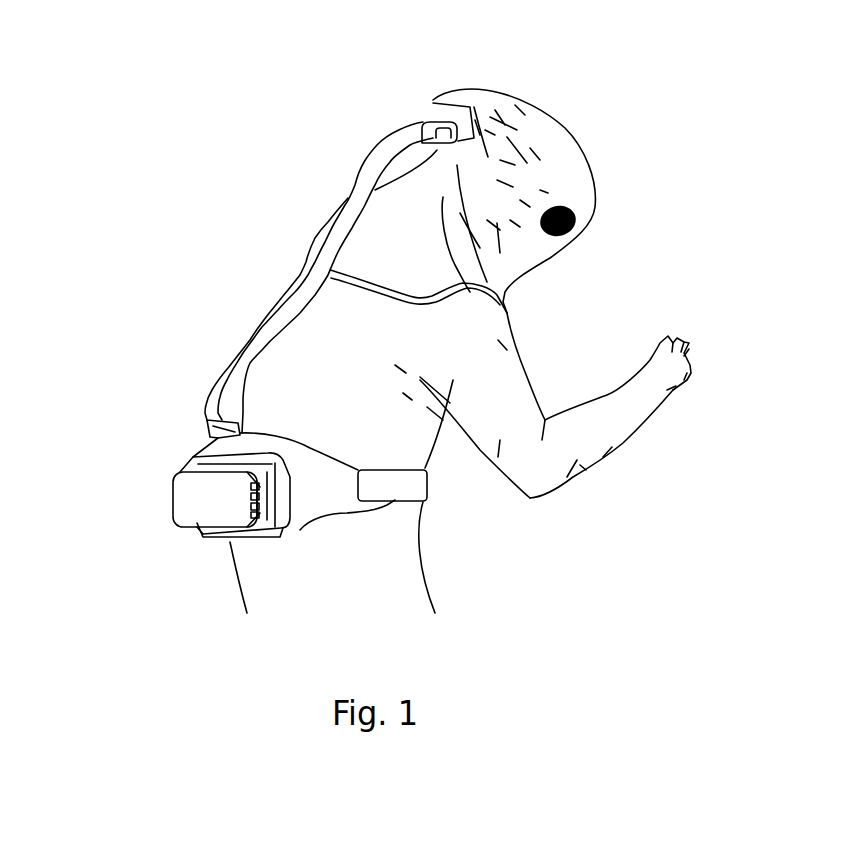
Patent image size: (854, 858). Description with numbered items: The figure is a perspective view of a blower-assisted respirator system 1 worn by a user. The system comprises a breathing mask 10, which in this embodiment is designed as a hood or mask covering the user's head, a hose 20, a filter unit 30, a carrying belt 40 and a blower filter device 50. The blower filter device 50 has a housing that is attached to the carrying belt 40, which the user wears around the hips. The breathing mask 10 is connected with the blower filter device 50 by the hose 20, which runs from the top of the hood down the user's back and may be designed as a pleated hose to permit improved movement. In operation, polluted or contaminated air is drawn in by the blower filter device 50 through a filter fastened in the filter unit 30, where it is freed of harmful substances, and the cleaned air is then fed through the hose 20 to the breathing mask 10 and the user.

The blower-assisted respirator system 1 is at (171, 84).
The breathing mask 10 is at (594, 137).
The hose 20 is at (313, 262).
The filter unit 30 is at (190, 478).
The carrying belt 40 is at (420, 482).
The blower filter device 50 is at (237, 543).